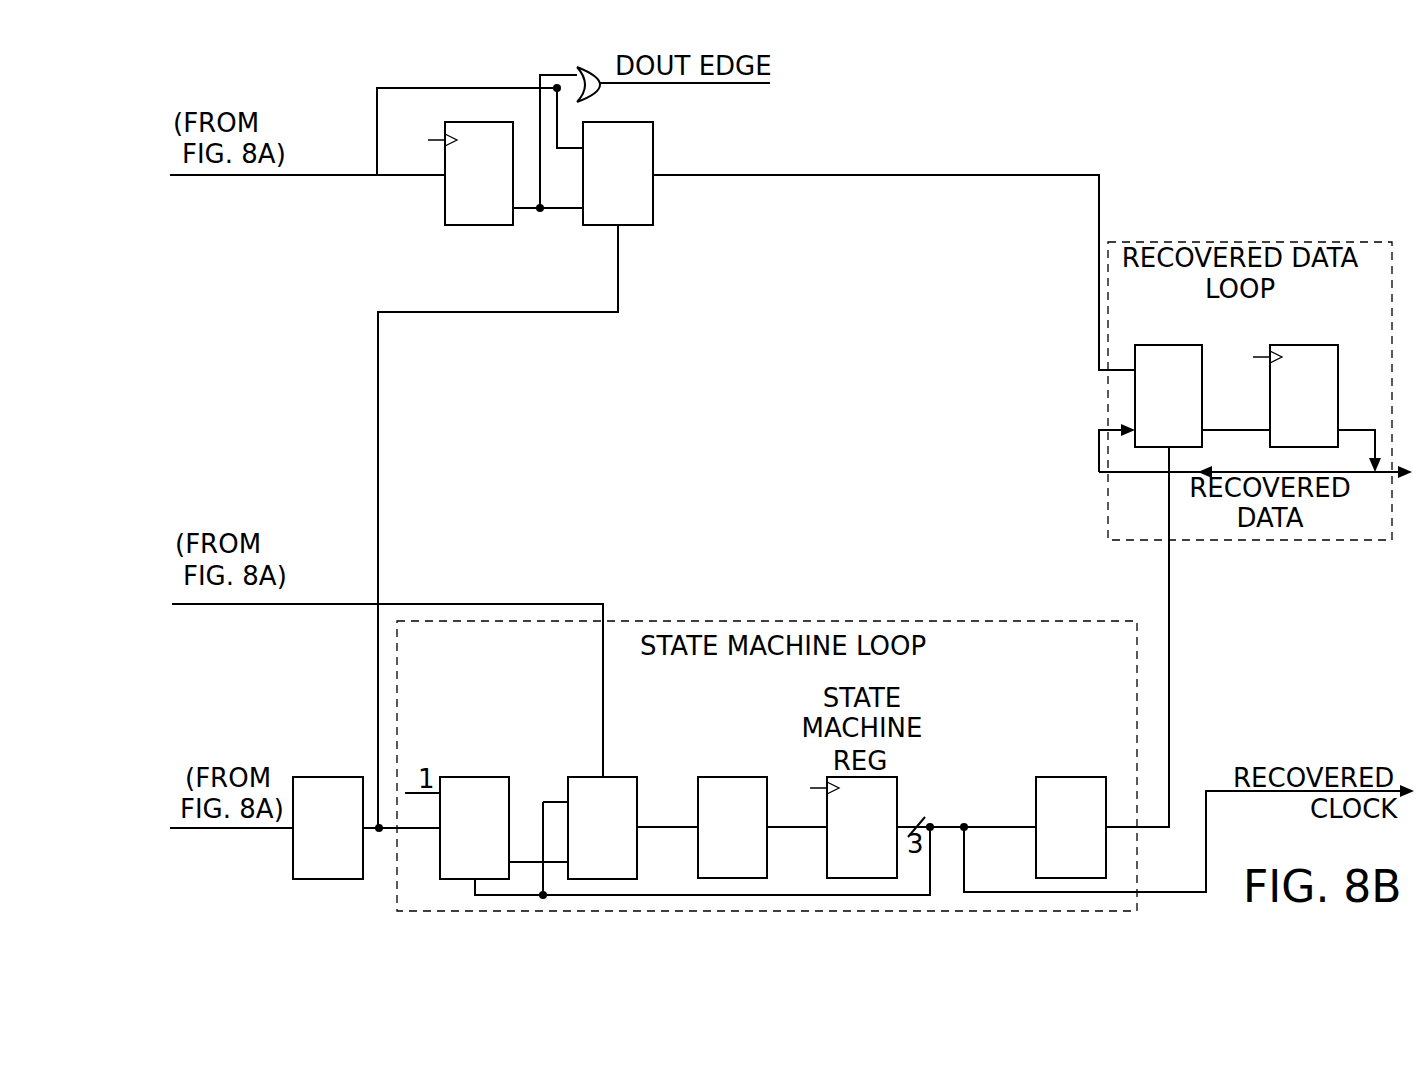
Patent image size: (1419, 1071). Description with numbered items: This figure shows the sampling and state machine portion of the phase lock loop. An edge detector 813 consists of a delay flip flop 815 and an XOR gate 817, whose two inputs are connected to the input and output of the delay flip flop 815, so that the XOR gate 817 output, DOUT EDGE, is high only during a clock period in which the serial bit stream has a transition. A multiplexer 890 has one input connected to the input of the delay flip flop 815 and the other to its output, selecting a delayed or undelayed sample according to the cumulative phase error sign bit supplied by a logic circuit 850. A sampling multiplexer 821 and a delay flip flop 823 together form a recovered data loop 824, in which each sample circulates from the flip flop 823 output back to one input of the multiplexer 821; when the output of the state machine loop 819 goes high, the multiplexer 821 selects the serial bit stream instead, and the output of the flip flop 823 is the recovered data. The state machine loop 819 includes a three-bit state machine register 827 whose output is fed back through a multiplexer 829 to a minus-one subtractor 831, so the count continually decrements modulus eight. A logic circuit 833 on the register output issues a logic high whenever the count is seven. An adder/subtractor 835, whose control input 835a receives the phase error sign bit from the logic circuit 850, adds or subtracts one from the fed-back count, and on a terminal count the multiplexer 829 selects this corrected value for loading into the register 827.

The edge detector 813 is at (568, 71).
The delay flip flop 815 is at (447, 224).
The XOR gate 817 is at (597, 95).
The multiplexer 890 is at (653, 212).
The recovered data loop 824 is at (1320, 242).
The sampling multiplexer 821 is at (1200, 360).
The delay flip flop 823 is at (1357, 340).
The state machine loop 819 is at (782, 622).
The logic circuit 850 is at (326, 777).
The adder/subtractor 835 is at (473, 777).
The control input 835a is at (425, 832).
The multiplexer 829 is at (568, 795).
The −1 subtractor 831 is at (705, 795).
The state machine register 827 is at (897, 805).
The logic circuit 833 is at (1036, 795).